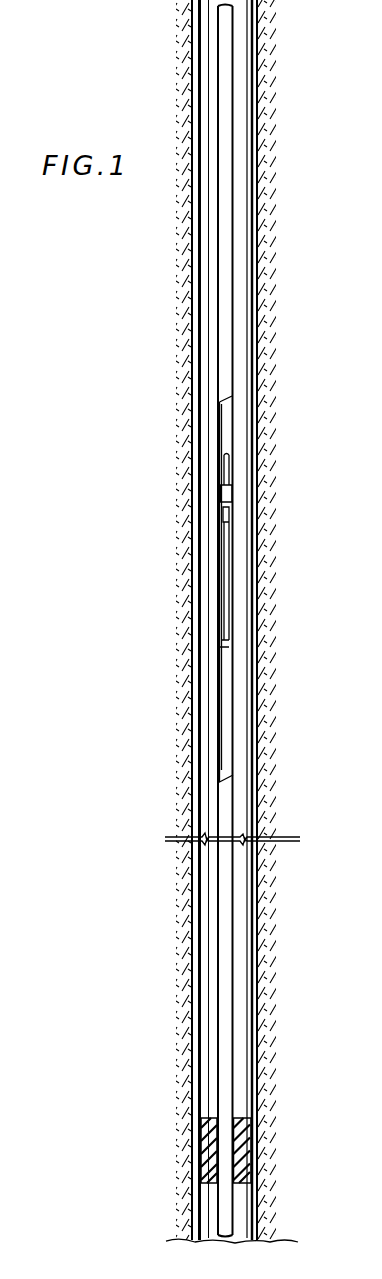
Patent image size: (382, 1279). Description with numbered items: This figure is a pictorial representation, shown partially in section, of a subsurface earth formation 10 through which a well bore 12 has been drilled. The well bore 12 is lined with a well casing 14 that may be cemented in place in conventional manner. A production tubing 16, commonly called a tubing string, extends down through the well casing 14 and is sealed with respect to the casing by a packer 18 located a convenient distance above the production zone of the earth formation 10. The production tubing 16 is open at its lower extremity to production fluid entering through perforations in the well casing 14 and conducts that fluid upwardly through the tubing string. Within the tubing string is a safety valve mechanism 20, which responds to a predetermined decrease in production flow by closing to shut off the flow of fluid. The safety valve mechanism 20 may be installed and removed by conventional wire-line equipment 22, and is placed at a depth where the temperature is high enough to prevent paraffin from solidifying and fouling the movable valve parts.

The earth formation 10 is at (263, 50).
The well bore 12 is at (257, 137).
The well casing 14 is at (259, 206).
The production tubing 16 is at (233, 328).
The packer 18 is at (250, 1147).
The safety valve mechanism 20 is at (236, 577).
The wire-line equipment 22 is at (229, 493).